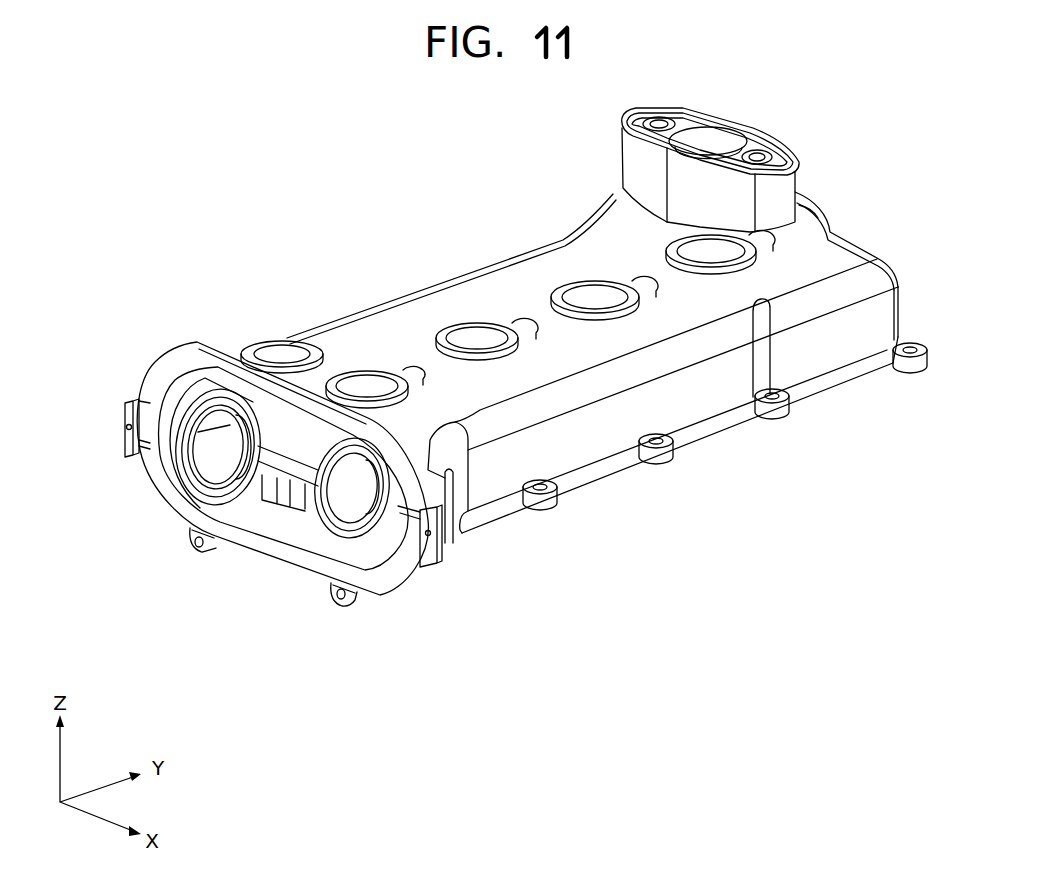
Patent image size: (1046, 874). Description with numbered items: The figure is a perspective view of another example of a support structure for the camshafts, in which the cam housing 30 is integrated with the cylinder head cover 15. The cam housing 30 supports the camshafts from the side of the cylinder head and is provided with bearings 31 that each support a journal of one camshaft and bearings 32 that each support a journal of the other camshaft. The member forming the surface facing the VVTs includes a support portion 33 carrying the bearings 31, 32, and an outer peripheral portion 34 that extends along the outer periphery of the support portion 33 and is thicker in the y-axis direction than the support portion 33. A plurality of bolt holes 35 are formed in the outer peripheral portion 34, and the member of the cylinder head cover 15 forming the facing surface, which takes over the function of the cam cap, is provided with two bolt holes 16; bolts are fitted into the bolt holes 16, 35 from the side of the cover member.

The cylinder head cover 15 is at (441, 272).
The bolt holes 16 is at (126, 429).
The cam housing 30 is at (841, 400).
The bearings 31 is at (291, 549).
The bearings 32 is at (217, 466).
The support portion 33 is at (263, 527).
The outer peripheral portion 34 is at (392, 577).
The bolt holes 35 is at (196, 544).